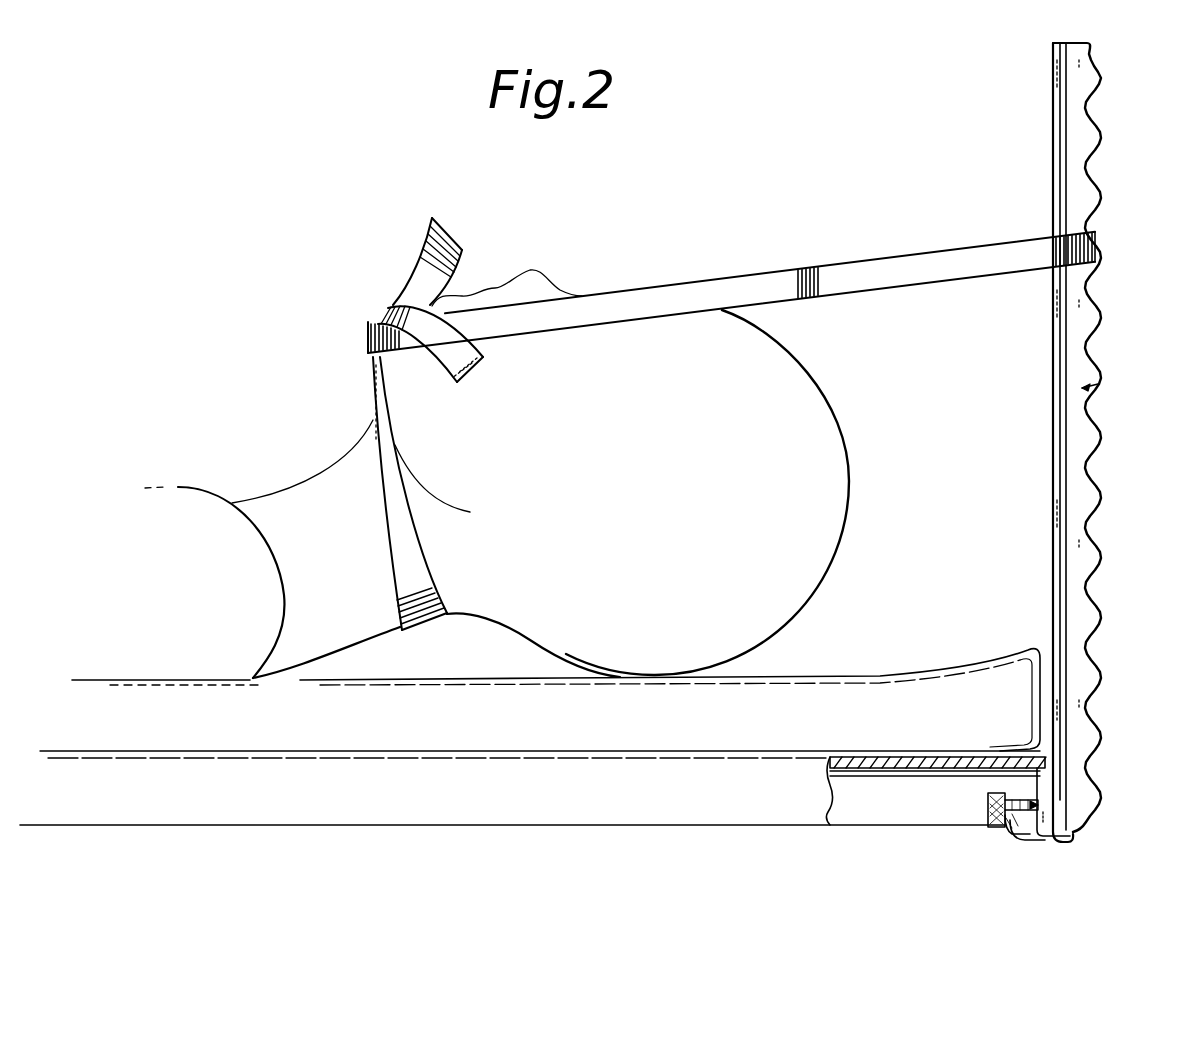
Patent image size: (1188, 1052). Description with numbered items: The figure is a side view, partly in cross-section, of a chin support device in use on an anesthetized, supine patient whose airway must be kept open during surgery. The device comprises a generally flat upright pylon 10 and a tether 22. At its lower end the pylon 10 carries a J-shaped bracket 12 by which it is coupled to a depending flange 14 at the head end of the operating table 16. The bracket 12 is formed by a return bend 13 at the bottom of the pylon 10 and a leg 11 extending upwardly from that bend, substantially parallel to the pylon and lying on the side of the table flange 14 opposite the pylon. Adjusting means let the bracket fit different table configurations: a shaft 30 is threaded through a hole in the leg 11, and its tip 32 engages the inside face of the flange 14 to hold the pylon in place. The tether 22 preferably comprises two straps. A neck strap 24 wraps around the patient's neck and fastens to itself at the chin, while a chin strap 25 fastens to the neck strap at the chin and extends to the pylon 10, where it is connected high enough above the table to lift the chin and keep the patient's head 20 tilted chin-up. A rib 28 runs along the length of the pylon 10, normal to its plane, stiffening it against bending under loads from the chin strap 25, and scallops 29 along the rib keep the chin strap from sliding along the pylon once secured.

The pylon 10 is at (1075, 112).
The leg 11 is at (1015, 834).
The J-shaped bracket 12 is at (1060, 840).
The return bend 13 is at (1038, 842).
The depending flange 14 is at (1040, 778).
The operating table 16 is at (612, 827).
The patient's head 20 is at (668, 498).
The tether 22 is at (760, 246).
The neck strap 24 is at (380, 486).
The chin strap 25 is at (898, 268).
The rib 28 is at (1098, 384).
The scallops 29 is at (1096, 323).
The shaft 30 is at (1000, 825).
The tip 32 is at (1038, 805).